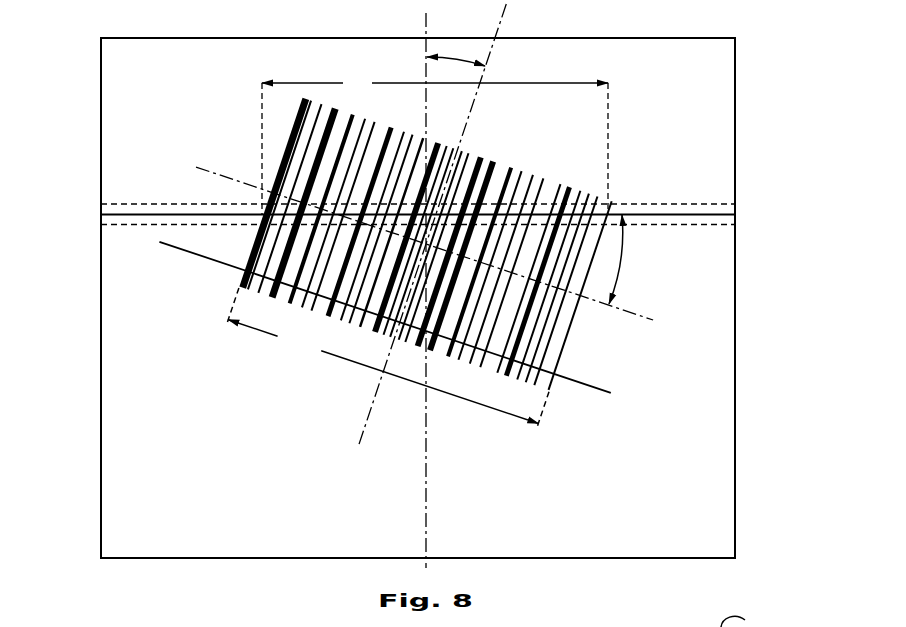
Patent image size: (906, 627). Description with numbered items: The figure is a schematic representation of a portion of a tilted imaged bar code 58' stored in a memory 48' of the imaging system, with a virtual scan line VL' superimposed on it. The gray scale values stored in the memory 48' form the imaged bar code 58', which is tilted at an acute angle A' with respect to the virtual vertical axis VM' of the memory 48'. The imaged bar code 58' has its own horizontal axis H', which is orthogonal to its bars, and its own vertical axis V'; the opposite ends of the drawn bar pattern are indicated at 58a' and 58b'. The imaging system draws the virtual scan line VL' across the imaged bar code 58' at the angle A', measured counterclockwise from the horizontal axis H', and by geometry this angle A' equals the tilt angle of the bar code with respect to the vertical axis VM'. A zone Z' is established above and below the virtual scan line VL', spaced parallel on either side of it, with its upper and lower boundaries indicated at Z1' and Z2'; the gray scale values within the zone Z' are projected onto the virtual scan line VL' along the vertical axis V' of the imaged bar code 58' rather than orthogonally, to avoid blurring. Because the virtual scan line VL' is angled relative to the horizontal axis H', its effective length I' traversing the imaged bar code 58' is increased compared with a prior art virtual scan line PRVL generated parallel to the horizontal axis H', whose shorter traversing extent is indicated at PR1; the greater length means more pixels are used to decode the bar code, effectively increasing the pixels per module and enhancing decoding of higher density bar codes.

The memory 48' is at (391, 298).
The imaged bar code 58' is at (459, 242).
The barcode right edge 58a' is at (585, 295).
The barcode left edge 58b' is at (244, 193).
The virtual scan line VL' is at (438, 183).
The virtual vertical axis of the memory VM' is at (386, 284).
The vertical axis of the imaged bar code V' is at (464, 224).
The horizontal axis of the imaged bar code H' is at (443, 269).
The zone Z' is at (398, 215).
The zone upper boundary Z1' is at (145, 173).
The zone lower boundary Z2' is at (140, 266).
The projection of barcode PR1 is at (388, 358).
The prior art virtual scan line PRVL is at (615, 396).
The effective length of the virtual scan line I' is at (435, 144).
The acute angle A' is at (544, 177).